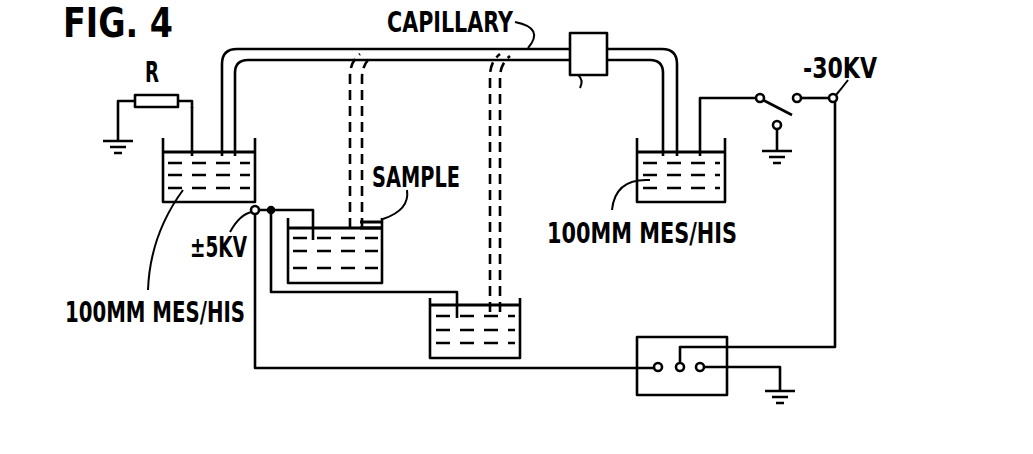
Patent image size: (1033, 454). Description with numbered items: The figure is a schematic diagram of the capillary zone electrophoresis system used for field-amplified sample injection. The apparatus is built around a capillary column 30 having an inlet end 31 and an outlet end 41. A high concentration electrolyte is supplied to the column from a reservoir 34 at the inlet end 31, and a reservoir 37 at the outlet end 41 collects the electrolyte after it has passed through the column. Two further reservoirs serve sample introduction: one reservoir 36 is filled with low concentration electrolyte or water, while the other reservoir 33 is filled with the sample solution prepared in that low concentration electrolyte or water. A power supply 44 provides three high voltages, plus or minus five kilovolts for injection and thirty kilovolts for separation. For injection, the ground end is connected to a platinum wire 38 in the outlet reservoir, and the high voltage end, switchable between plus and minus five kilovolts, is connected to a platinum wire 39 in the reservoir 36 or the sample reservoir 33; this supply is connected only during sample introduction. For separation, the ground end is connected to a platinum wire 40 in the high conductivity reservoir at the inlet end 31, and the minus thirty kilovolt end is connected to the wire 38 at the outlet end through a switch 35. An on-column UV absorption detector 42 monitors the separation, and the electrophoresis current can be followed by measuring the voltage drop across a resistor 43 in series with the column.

The capillary column 30 is at (270, 47).
The inlet end 31 is at (237, 158).
The reservoir filled with sample solution 33 is at (392, 258).
The reservoir 34 is at (152, 192).
The switch 35 is at (786, 108).
The reservoir filled with low concentration electrolyte 36 is at (421, 346).
The reservoir 37 is at (733, 188).
The wire 38 is at (701, 104).
The wire 39 is at (305, 208).
The wire 40 is at (180, 97).
The outlet end 41 is at (637, 153).
The detector 42 is at (608, 36).
The resistor 43 is at (135, 95).
The power supply 44 is at (703, 328).